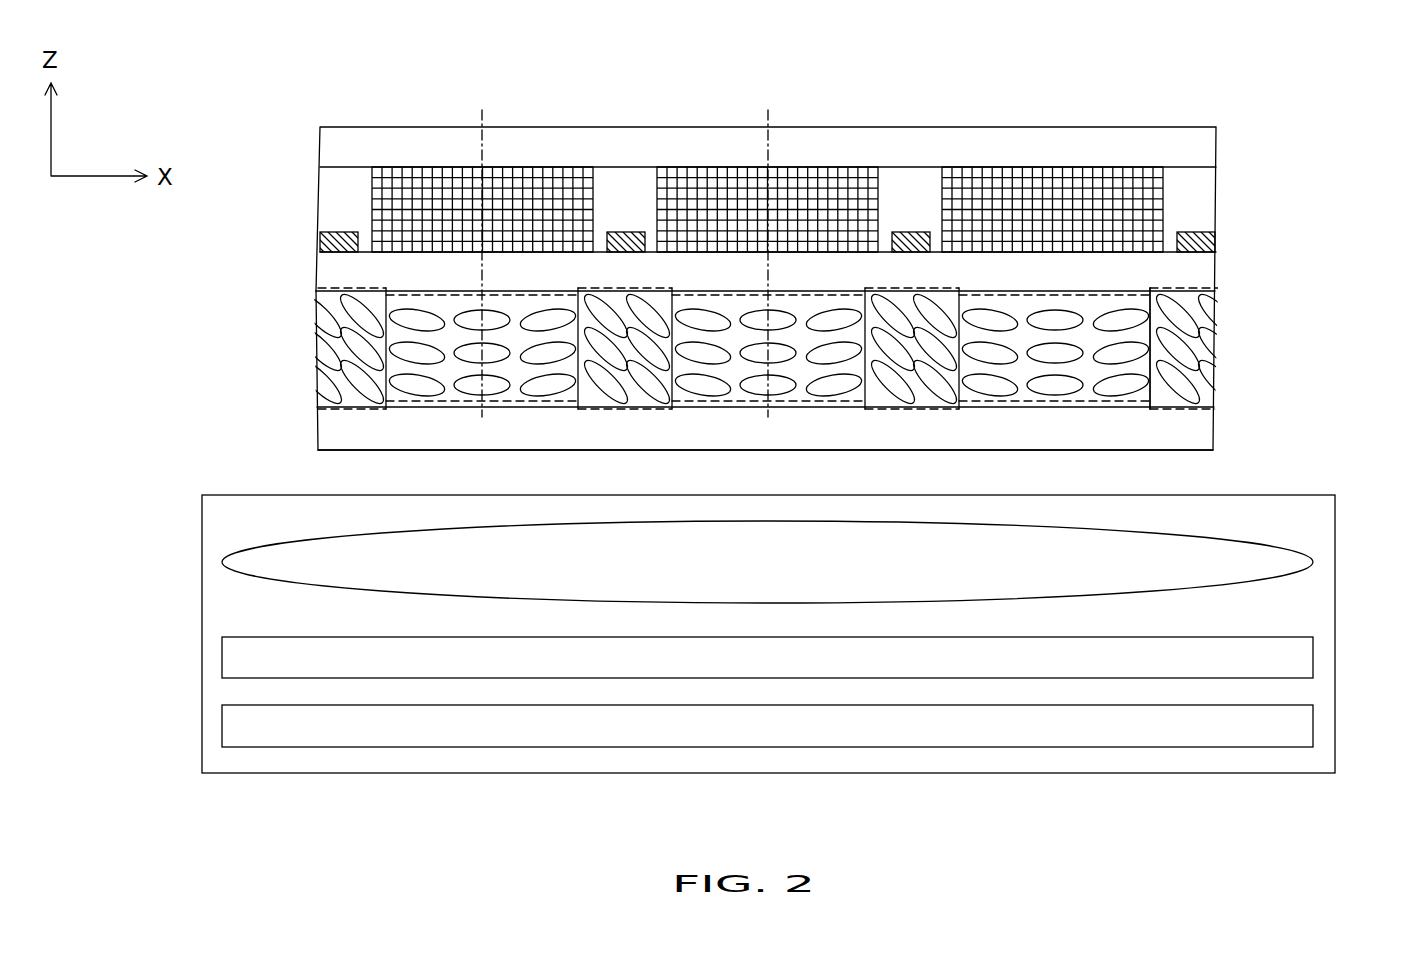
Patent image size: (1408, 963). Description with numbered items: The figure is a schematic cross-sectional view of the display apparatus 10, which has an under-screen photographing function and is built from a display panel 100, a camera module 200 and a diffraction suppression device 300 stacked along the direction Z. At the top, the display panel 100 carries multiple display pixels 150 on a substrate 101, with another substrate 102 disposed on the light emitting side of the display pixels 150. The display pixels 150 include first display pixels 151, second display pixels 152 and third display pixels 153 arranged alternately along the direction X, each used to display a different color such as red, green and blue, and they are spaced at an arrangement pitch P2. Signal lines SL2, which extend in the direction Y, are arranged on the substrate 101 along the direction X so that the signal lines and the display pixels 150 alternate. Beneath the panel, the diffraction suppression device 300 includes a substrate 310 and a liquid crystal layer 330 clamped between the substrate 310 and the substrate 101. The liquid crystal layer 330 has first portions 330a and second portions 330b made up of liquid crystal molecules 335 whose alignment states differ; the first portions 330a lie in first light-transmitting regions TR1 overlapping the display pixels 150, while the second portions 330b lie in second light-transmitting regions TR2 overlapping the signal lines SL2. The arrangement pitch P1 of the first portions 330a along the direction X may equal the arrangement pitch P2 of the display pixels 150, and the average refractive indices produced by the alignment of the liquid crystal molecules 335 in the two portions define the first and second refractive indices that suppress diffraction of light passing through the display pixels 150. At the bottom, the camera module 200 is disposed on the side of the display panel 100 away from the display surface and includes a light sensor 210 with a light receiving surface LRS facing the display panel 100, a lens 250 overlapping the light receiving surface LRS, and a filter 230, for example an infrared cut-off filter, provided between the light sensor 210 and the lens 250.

The display apparatus 10 is at (1407, 843).
The display panel 100 is at (302, 125).
The substrate 101 is at (1203, 268).
The substrate 102 is at (1207, 145).
The display pixels 150 is at (767, 132).
The first display pixels 151 is at (458, 180).
The second display pixels 152 is at (813, 180).
The third display pixels 153 is at (1060, 175).
The signal lines SL2 is at (1213, 245).
The first light-transmitting regions TR1 is at (420, 295).
The second light-transmitting regions TR2 is at (364, 291).
The arrangement pitch P1 is at (482, 432).
The arrangement pitch P2 is at (758, 100).
The diffraction suppression device 300 is at (302, 291).
The liquid crystal layer 330 is at (794, 242).
The first portions 330a is at (848, 313).
The second portions 330b is at (925, 305).
The liquid crystal molecules 335 is at (1200, 345).
The substrate 310 is at (1200, 430).
The camera module 200 is at (182, 495).
The light sensor 210 is at (1295, 728).
The filter 230 is at (1293, 662).
The lens 250 is at (1305, 562).
The light receiving surface LRS is at (375, 690).